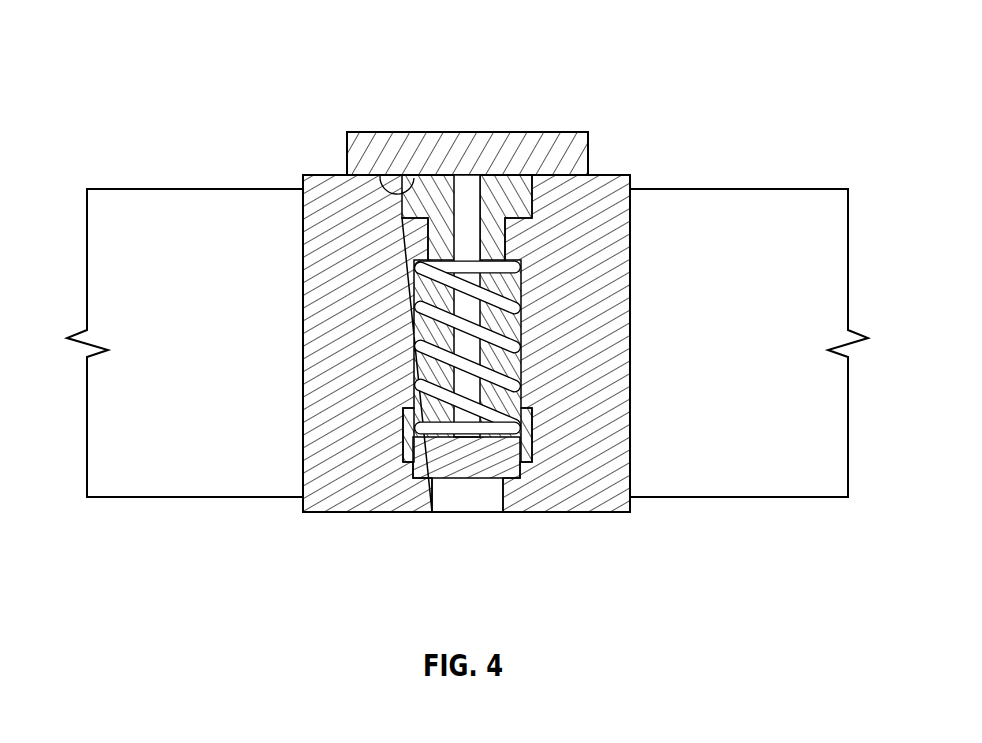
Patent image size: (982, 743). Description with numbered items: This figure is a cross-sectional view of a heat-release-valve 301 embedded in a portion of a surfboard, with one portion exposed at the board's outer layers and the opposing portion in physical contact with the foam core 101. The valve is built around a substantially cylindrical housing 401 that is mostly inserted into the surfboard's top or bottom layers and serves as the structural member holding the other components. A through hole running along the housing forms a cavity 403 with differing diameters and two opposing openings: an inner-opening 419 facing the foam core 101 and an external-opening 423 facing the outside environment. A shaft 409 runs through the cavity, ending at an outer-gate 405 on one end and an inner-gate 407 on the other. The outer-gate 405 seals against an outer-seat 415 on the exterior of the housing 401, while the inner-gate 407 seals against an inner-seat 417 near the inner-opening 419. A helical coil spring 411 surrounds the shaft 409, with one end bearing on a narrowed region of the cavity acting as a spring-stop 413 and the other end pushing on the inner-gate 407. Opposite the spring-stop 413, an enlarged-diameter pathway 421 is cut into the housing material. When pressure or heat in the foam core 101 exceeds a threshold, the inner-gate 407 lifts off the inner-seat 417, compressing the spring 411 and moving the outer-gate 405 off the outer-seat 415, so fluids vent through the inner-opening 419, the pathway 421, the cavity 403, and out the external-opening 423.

The foam core 101 is at (524, 632).
The heat-release-valve 301 is at (325, 175).
The housing 401 is at (370, 313).
The cavity 403 is at (523, 292).
The outer-gate 405 is at (377, 132).
The inner-gate 407 is at (477, 480).
The shaft 409 is at (490, 203).
The spring 411 is at (468, 176).
The spring-stop 413 is at (427, 235).
The outer-seat 415 is at (453, 257).
The inner-seat 417 is at (424, 485).
The inner-opening 419 is at (508, 481).
The pathway 421 is at (535, 437).
The external-opening 423 is at (533, 207).